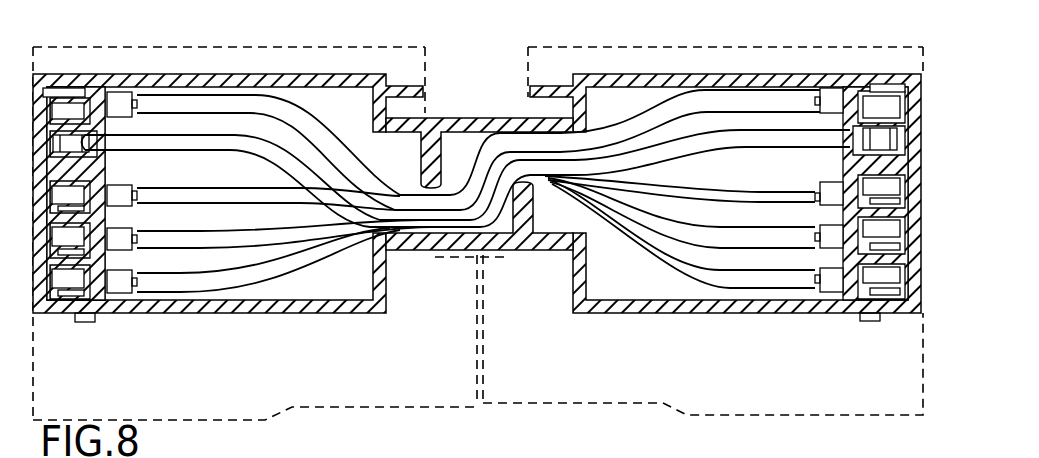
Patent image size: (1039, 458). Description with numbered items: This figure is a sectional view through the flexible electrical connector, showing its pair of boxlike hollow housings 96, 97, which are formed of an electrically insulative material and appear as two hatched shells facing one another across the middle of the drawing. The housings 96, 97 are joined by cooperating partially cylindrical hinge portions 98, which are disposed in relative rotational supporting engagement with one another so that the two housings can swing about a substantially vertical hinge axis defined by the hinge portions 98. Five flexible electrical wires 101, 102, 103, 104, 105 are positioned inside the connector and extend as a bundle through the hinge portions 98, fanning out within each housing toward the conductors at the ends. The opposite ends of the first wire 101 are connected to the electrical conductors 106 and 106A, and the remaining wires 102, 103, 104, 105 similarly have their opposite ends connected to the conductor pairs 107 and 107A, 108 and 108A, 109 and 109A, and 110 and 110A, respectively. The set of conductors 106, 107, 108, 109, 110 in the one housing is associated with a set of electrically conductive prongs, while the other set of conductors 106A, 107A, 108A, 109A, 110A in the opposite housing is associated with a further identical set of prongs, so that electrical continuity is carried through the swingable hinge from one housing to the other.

The boxlike hollow housing 96 is at (739, 313).
The boxlike hollow housing 97 is at (278, 313).
The partially cylindrical hinge portions 98 is at (449, 118).
The flexible electrical wire 101 is at (706, 102).
The flexible electrical wire 102 is at (745, 141).
The flexible electrical wire 103 is at (772, 193).
The flexible electrical wire 104 is at (683, 224).
The flexible electrical wire 105 is at (683, 258).
The electrical conductor 106 is at (883, 95).
The electrical conductor 107 is at (860, 138).
The electrical conductor 108 is at (850, 202).
The electrical conductor 109 is at (850, 248).
The electrical conductor 110 is at (877, 282).
The electrical conductor 106A is at (66, 106).
The electrical conductor 107A is at (72, 140).
The electrical conductor 108A is at (90, 198).
The electrical conductor 109A is at (75, 238).
The electrical conductor 110A is at (78, 288).